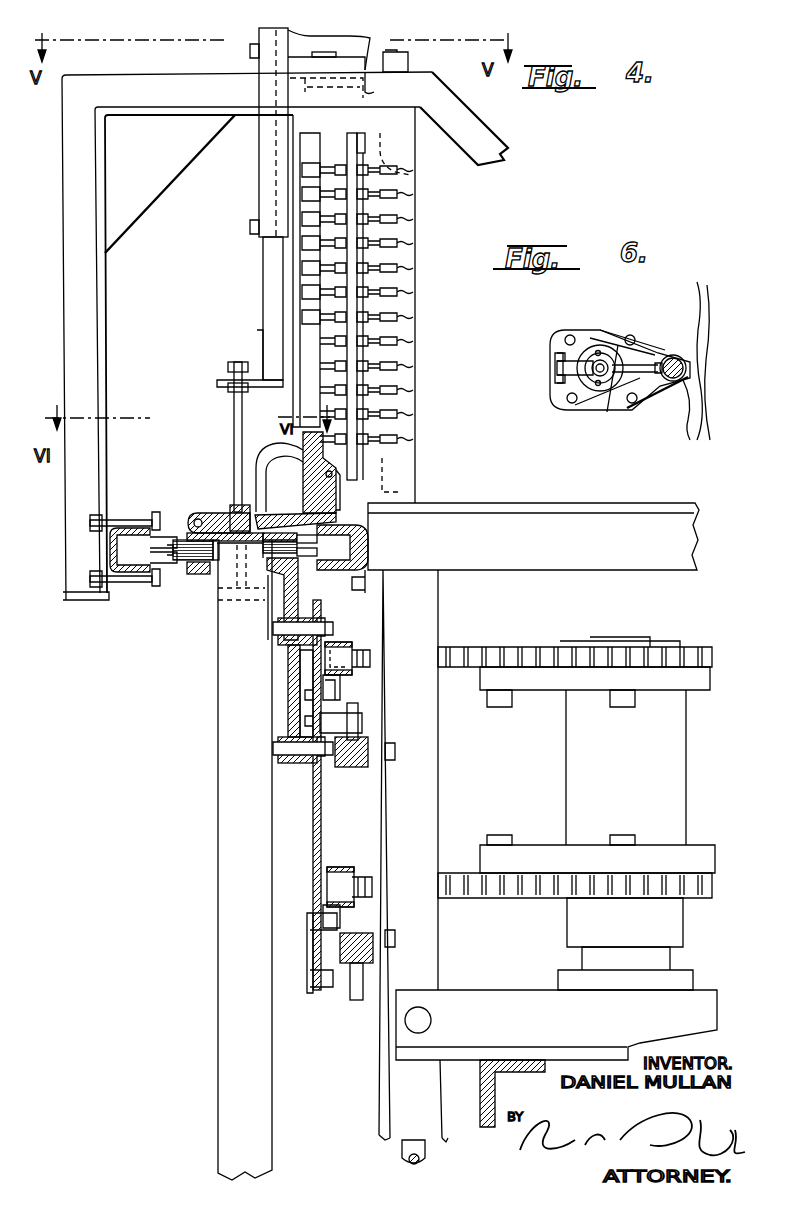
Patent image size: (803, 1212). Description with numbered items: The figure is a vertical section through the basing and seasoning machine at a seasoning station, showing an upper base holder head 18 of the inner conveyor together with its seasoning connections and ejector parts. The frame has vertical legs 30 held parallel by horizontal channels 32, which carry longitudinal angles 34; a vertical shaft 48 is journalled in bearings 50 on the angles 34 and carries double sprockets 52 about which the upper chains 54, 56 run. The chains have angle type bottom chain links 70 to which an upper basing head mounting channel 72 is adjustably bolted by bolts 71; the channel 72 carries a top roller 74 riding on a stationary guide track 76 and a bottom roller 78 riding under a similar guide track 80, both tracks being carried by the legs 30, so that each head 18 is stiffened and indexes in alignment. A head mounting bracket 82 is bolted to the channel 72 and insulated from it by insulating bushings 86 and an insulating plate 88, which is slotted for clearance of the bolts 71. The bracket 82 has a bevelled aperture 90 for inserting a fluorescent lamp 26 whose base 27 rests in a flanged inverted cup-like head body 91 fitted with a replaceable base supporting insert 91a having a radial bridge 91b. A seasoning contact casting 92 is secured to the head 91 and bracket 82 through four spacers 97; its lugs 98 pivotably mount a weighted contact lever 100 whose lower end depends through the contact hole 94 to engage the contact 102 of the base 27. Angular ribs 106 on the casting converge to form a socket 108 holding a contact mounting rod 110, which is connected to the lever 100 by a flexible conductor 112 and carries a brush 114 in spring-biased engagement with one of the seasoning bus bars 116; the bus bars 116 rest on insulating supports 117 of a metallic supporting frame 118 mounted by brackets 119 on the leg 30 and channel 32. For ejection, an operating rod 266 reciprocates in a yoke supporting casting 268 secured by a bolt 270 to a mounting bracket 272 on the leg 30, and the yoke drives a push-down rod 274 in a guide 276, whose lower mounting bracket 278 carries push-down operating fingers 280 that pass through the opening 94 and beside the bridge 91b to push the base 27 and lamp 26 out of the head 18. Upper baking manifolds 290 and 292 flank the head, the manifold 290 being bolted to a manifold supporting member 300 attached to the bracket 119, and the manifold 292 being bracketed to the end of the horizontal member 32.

In FIG. 4, the upper base holder head 18 is at (300, 845).
In FIG. 4, the fluorescent lamp 26 is at (218, 745).
In FIG. 4, the base 27 is at (217, 560).
In FIG. 4, the vertical leg 30 is at (438, 817).
In FIG. 4, the horizontal channel 32 is at (512, 512).
In FIG. 4, the longitudinal angle 34 is at (480, 1097).
In FIG. 4, the vertical shaft 48 is at (620, 637).
In FIG. 4, the bearing 50 is at (582, 965).
In FIG. 4, the double sprocket 52 is at (566, 748).
In FIG. 4, the upper chain 54 is at (342, 642).
In FIG. 4, the upper chain 56 is at (342, 867).
In FIG. 4, the angle type bottom chain link 70 is at (335, 700).
In FIG. 4, the bolt 71 is at (300, 685).
In FIG. 4, the upper basing head mounting channel 72 is at (321, 820).
In FIG. 4, the top roller 74 is at (358, 715).
In FIG. 4, the guide track 76 is at (362, 767).
In FIG. 4, the bottom roller 78 is at (355, 1000).
In FIG. 4, the guide track 80 is at (370, 955).
In FIG. 4, the head mounting bracket 82 is at (298, 588).
In FIG. 4, the insulating bushing 86 is at (278, 640).
In FIG. 4, the insulating plate 88 is at (288, 660).
In FIG. 4, the bevelled aperture 90 is at (192, 562).
In FIG. 4, the head body 91 is at (185, 572).
In FIG. 4, the base supporting insert 91a is at (205, 533).
In FIG. 6, the base supporting insert 91a is at (628, 345).
In FIG. 6, the radial bridge 91b is at (556, 340).
In FIG. 4, the seasoning contact casting 92 is at (342, 497).
In FIG. 4, the contact hole 94 is at (250, 530).
In FIG. 6, the contact hole 94 is at (590, 348).
In FIG. 4, the spacer 97 is at (255, 590).
In FIG. 6, the lug 98 is at (557, 355).
In FIG. 4, the weighted contact lever 100 is at (190, 515).
In FIG. 6, the weighted contact lever 100 is at (557, 367).
In FIG. 4, the contact 102 is at (236, 505).
In FIG. 4, the angular rib 106 is at (268, 510).
In FIG. 6, the angular rib 106 is at (613, 395).
In FIG. 4, the socket 108 is at (340, 510).
In FIG. 6, the socket 108 is at (673, 355).
In FIG. 4, the contact mounting rod 110 is at (305, 402).
In FIG. 6, the contact mounting rod 110 is at (672, 385).
In FIG. 4, the flexible conductor 112 is at (270, 462).
In FIG. 6, the flexible conductor 112 is at (630, 405).
In FIG. 4, the brush 114 is at (300, 248).
In FIG. 6, the brush 114 is at (687, 425).
In FIG. 4, the seasoning bus bar 116 is at (326, 163).
In FIG. 6, the seasoning bus bar 116 is at (697, 300).
In FIG. 4, the insulating support 117 is at (357, 262).
In FIG. 4, the supporting frame 118 is at (410, 308).
In FIG. 4, the bracket 119 is at (410, 170).
In FIG. 4, the operating rod 266 is at (408, 57).
In FIG. 4, the yoke supporting casting 268 is at (376, 82).
In FIG. 4, the bolt 270 is at (330, 50).
In FIG. 4, the mounting bracket 272 is at (258, 88).
In FIG. 4, the push-down rod 274 is at (263, 282).
In FIG. 4, the guide 276 is at (259, 178).
In FIG. 4, the mounting bracket 278 is at (257, 345).
In FIG. 4, the push-down operating finger 280 is at (234, 406).
In FIG. 6, the push-down operating finger 280 is at (600, 350).
In FIG. 4, the upper baking manifold 290 is at (127, 548).
In FIG. 4, the upper baking manifold 292 is at (358, 550).
In FIG. 4, the manifold supporting member 300 is at (92, 323).